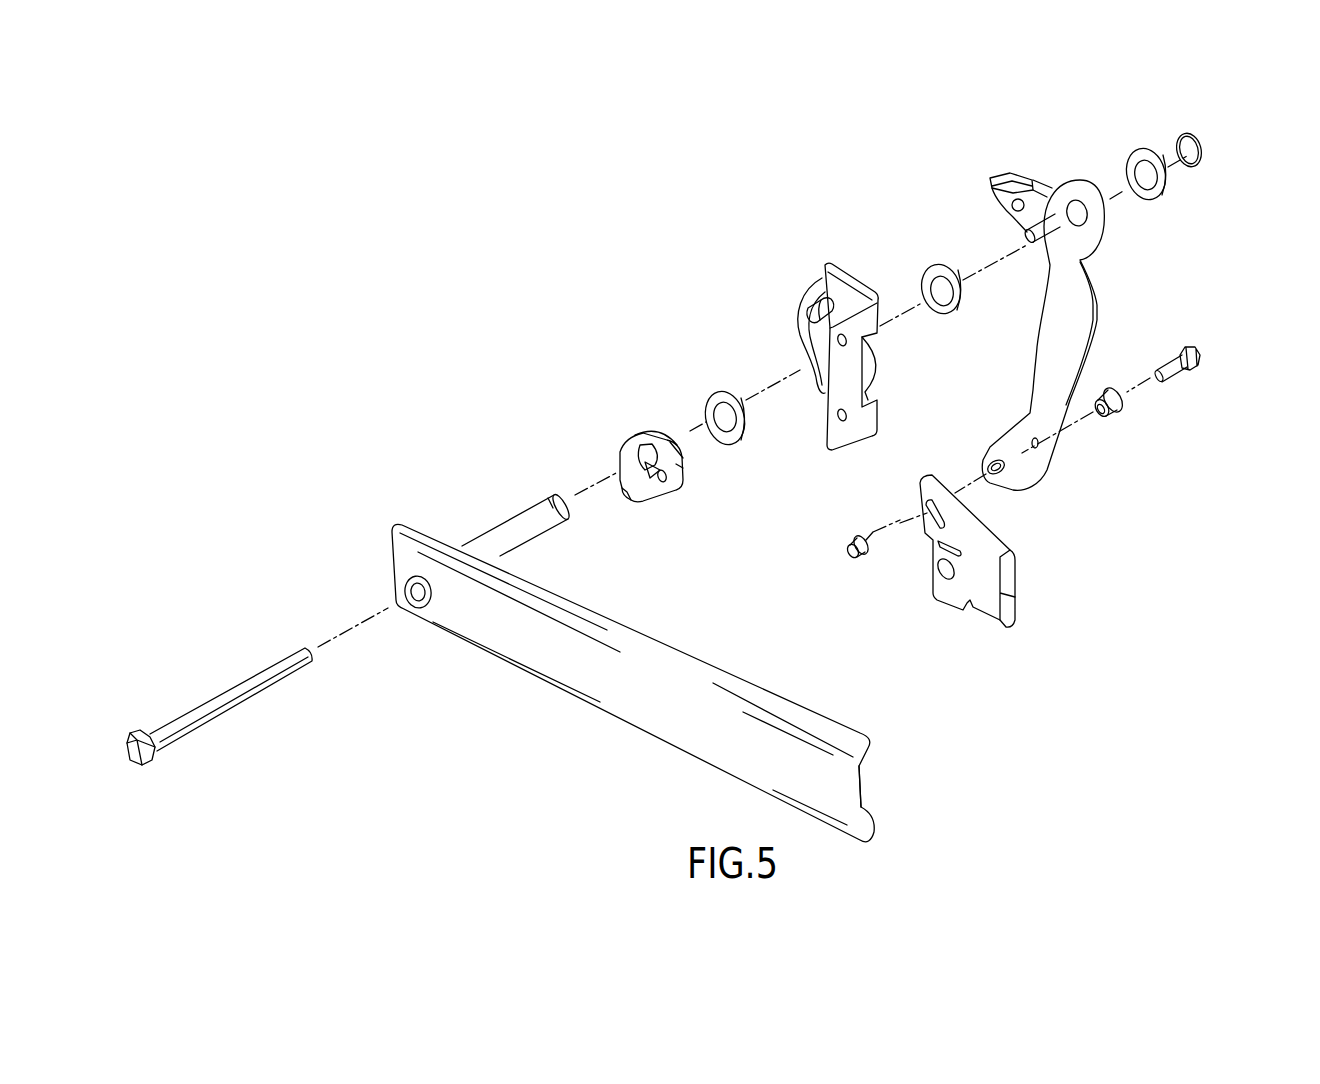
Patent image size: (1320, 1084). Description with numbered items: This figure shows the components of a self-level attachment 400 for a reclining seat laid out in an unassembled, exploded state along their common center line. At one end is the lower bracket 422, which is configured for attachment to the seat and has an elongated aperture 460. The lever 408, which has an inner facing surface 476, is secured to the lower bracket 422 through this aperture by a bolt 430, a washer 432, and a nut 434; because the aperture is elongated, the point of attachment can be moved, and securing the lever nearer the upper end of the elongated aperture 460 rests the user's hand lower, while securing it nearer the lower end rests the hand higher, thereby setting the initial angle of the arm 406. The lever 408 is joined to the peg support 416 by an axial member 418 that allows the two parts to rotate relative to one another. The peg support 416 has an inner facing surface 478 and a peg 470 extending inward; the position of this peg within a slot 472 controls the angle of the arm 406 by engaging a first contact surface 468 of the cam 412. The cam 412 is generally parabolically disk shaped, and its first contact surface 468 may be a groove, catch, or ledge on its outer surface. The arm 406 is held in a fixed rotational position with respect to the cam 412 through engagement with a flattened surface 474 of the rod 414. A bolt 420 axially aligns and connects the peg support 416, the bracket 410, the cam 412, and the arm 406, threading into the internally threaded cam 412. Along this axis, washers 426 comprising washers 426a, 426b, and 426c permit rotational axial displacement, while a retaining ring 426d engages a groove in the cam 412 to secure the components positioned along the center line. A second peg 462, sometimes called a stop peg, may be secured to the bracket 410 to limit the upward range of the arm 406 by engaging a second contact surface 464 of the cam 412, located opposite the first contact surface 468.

The self-level attachment 400 is at (474, 255).
The arm 406 is at (670, 723).
The lever 408 is at (1061, 294).
The bracket 410 is at (808, 321).
The cam 412 is at (620, 469).
The rod 414 is at (514, 489).
The peg support 416 is at (1043, 180).
The axial member 418 is at (1016, 205).
The bolt 420 is at (230, 693).
The lower bracket 422 is at (973, 551).
The washers 426 is at (995, 305).
The washer 426a is at (737, 447).
The washer 426b is at (947, 313).
The washer 426c is at (1157, 193).
The retaining ring 426d is at (1183, 145).
The bolt 430 is at (1173, 377).
The washer 432 is at (1117, 420).
The nut 434 is at (851, 560).
The elongated aperture 460 is at (927, 527).
The second peg 462 is at (823, 297).
The second contact surface 464 is at (653, 483).
The first contact surface 468 is at (627, 480).
The peg 470 is at (1047, 223).
The slot 472 is at (818, 343).
The flattened surface 474 is at (555, 497).
The inner facing surface 476 is at (1043, 393).
The inner facing surface 478 is at (1070, 237).